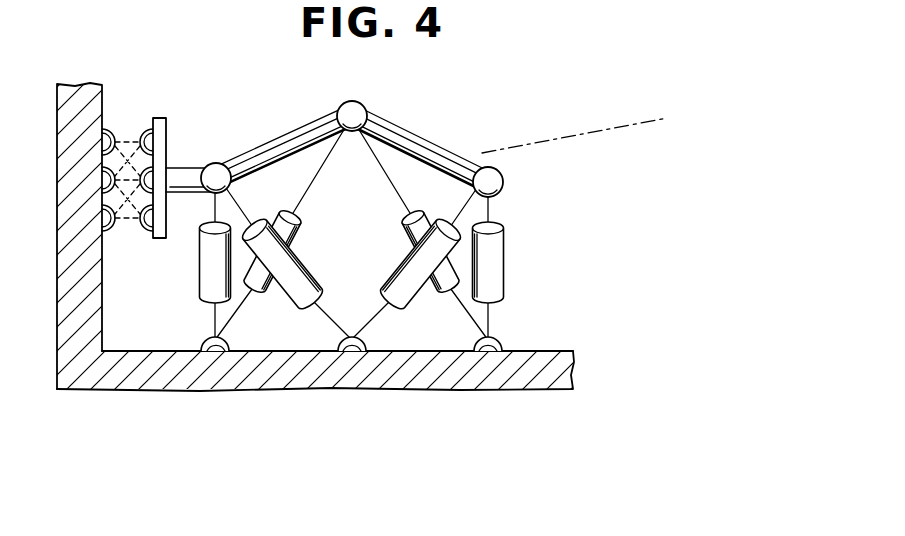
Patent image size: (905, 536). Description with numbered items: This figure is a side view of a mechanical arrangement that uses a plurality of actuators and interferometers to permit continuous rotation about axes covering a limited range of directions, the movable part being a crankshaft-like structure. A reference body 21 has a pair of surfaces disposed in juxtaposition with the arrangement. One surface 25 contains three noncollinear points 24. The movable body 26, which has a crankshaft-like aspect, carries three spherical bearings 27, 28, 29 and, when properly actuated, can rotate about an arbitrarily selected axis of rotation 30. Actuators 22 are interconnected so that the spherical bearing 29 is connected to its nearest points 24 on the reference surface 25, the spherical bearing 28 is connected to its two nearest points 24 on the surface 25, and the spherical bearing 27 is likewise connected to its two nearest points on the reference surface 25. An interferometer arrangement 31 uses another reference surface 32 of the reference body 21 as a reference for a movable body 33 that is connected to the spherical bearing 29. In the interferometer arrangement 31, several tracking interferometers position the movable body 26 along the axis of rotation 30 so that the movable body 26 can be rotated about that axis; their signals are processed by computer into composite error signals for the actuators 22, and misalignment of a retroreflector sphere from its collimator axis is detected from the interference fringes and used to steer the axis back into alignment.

The reference body 21 is at (408, 389).
The actuators 22 is at (200, 270).
The noncollinear points 24 is at (206, 342).
The reference surface 25 is at (540, 351).
The movable body 26 is at (428, 110).
The spherical bearing 27 is at (505, 182).
The spherical bearing 28 is at (358, 106).
The spherical bearing 29 is at (216, 166).
The axis of rotation 30 is at (606, 125).
The interferometer arrangement 31 is at (128, 112).
The reference surface 32 is at (104, 280).
The movable body 33 is at (158, 118).